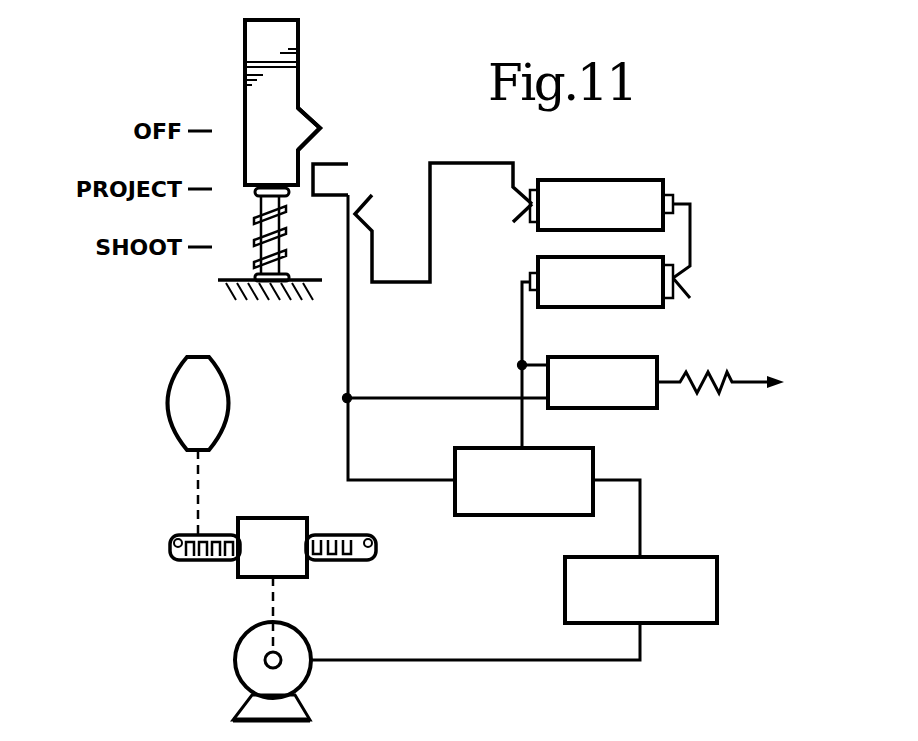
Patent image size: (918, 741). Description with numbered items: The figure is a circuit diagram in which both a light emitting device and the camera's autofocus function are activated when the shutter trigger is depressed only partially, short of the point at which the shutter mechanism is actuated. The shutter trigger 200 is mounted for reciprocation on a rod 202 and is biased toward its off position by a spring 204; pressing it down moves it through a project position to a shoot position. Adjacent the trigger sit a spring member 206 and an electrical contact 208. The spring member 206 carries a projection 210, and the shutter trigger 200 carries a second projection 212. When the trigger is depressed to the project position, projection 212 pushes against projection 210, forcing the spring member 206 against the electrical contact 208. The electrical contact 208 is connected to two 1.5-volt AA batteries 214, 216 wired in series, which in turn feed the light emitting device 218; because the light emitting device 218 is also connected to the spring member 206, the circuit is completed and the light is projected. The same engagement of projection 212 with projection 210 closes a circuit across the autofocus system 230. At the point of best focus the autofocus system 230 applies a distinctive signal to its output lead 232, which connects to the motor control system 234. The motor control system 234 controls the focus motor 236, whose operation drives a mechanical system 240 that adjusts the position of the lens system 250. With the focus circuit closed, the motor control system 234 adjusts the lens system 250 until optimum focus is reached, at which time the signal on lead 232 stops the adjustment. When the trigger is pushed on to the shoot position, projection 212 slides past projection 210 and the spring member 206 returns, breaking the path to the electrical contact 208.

The shutter trigger 200 is at (298, 65).
The rod 202 is at (258, 252).
The spring 204 is at (287, 252).
The spring member 206 is at (348, 315).
The electrical contact 208 is at (372, 195).
The projection 210 is at (311, 195).
The second projection 212 is at (298, 116).
The battery 214 is at (590, 180).
The battery 216 is at (572, 308).
The light emitting device 218 is at (603, 410).
The autofocus system 230 is at (495, 447).
The lead 232 is at (640, 532).
The motor control system 234 is at (665, 623).
The focus motor 236 is at (240, 680).
The mechanical system 240 is at (274, 517).
The lens system 250 is at (167, 408).